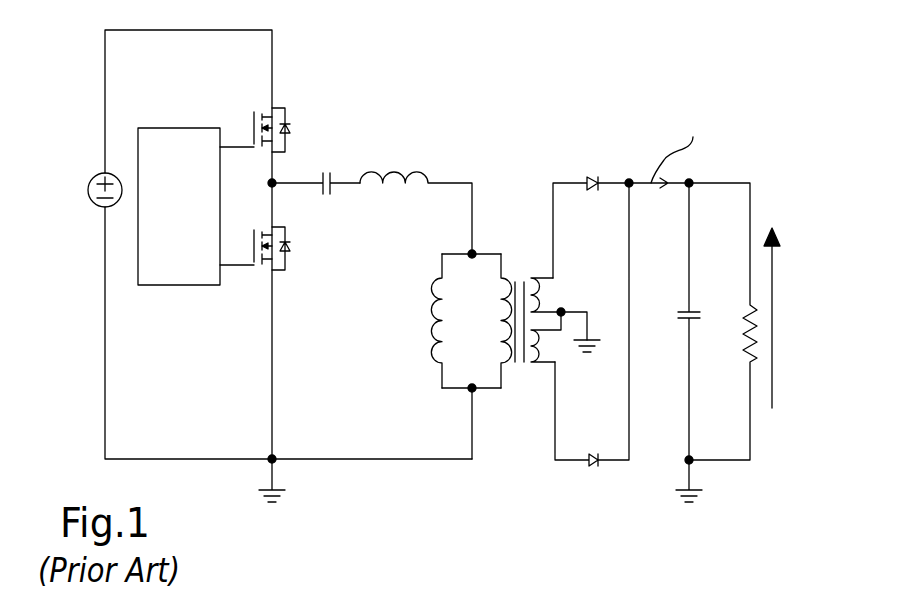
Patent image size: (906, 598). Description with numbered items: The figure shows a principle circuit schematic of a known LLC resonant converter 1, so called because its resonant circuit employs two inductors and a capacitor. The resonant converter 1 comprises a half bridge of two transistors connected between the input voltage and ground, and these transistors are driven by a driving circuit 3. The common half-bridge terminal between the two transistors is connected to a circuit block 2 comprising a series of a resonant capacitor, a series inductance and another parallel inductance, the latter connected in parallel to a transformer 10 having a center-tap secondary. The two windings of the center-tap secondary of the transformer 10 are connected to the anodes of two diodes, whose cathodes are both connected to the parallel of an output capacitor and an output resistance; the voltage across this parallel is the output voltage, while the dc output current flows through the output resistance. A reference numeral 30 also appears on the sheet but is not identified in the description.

The resonant converter 1 is at (297, 63).
The circuit block 2 is at (381, 135).
The driving circuit 3 is at (163, 128).
The transformer 10 is at (521, 268).
The numeral 30 (partially shown) 30 is at (256, 597).